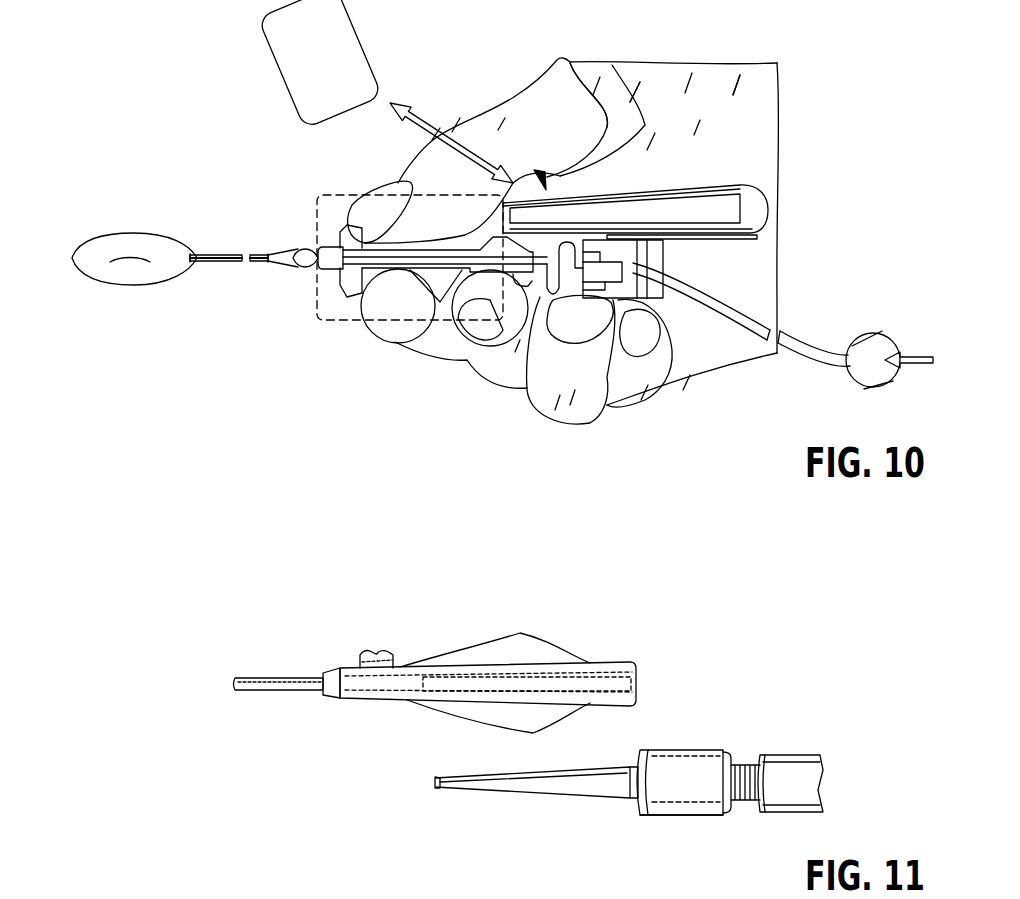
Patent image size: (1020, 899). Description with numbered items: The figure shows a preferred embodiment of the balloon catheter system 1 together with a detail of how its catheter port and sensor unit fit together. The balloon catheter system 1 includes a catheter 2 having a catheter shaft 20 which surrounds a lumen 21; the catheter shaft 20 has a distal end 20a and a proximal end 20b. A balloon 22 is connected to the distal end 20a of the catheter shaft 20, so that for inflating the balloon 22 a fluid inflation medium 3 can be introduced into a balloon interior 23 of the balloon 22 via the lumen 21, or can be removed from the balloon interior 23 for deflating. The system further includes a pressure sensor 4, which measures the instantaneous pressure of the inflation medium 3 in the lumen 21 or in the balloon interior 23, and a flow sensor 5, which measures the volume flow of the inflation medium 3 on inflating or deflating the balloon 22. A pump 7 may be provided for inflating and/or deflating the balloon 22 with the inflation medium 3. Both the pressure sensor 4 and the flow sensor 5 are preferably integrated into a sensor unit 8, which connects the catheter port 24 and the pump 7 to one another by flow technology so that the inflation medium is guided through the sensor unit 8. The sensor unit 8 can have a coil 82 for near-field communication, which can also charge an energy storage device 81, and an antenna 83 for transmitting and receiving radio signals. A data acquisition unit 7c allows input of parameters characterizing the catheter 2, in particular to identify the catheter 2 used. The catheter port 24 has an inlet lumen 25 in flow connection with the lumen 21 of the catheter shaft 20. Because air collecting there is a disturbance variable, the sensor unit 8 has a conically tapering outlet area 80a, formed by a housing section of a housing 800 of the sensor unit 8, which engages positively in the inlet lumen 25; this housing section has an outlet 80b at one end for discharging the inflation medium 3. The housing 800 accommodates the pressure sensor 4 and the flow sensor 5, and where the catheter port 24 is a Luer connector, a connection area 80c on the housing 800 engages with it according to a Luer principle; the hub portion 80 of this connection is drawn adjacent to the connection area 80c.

In FIG. 10, the balloon catheter system 1 is at (252, 158).
In FIG. 10, the catheter 2 is at (212, 226).
In FIG. 10, the fluid inflation medium 3 is at (918, 351).
In FIG. 10, the pressure sensor 4 is at (567, 290).
In FIG. 10, the flow sensor 5 is at (547, 377).
In FIG. 10, the pump 7 is at (867, 352).
In FIG. 10, the data acquisition unit 7c is at (292, 42).
In FIG. 10, the sensor unit 8 is at (500, 163).
In FIG. 11, the sensor unit 8 is at (790, 728).
In FIG. 10, the catheter shaft 20 is at (220, 262).
In FIG. 11, the catheter shaft 20 is at (270, 692).
In FIG. 10, the distal end 20a is at (193, 267).
In FIG. 10, the proximal end 20b is at (304, 253).
In FIG. 11, the proximal end 20b is at (320, 698).
In FIG. 10, the lumen 21 is at (282, 264).
In FIG. 10, the balloon 22 is at (110, 233).
In FIG. 10, the balloon interior 23 is at (120, 273).
In FIG. 10, the catheter port 24 is at (333, 267).
In FIG. 11, the catheter port 24 is at (530, 652).
In FIG. 11, the inlet lumen 25 is at (472, 678).
In FIG. 11, the needle hub 80 is at (710, 798).
In FIG. 11, the outlet area 80a is at (548, 783).
In FIG. 11, the outlet 80b is at (436, 790).
In FIG. 11, the connection area 80c is at (663, 818).
In FIG. 10, the energy storage device 81 is at (622, 210).
In FIG. 10, the coil 82 is at (675, 190).
In FIG. 10, the antenna 83 is at (727, 231).
In FIG. 10, the housing 800 is at (757, 200).